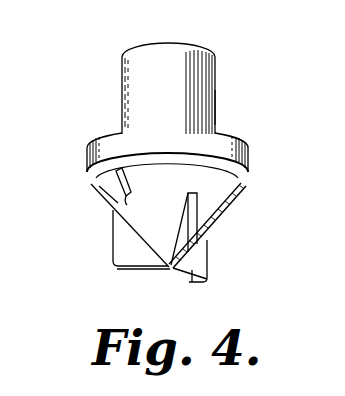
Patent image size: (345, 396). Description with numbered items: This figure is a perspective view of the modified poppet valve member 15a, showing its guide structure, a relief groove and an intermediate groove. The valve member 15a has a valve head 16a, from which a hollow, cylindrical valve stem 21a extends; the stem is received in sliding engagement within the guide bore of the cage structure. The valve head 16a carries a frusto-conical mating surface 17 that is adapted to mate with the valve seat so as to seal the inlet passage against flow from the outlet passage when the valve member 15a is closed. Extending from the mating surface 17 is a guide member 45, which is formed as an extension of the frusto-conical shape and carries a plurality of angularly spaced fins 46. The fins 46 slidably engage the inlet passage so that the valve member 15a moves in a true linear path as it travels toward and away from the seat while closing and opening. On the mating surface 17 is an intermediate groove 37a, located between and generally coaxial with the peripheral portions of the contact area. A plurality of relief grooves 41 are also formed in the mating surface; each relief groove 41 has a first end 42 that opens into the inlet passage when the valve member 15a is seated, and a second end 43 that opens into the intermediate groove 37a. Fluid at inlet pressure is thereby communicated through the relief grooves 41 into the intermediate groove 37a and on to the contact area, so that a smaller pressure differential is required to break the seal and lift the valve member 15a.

The valve member 15a is at (213, 53).
The valve stem 21a is at (216, 108).
The valve head 16a is at (249, 167).
The mating surface 17 is at (92, 188).
The intermediate groove 37a is at (185, 166).
The guide member 45 is at (222, 214).
The second end 43 is at (92, 179).
The relief groove 41 is at (108, 211).
The first end 42 is at (128, 198).
The fin 46 is at (133, 270).